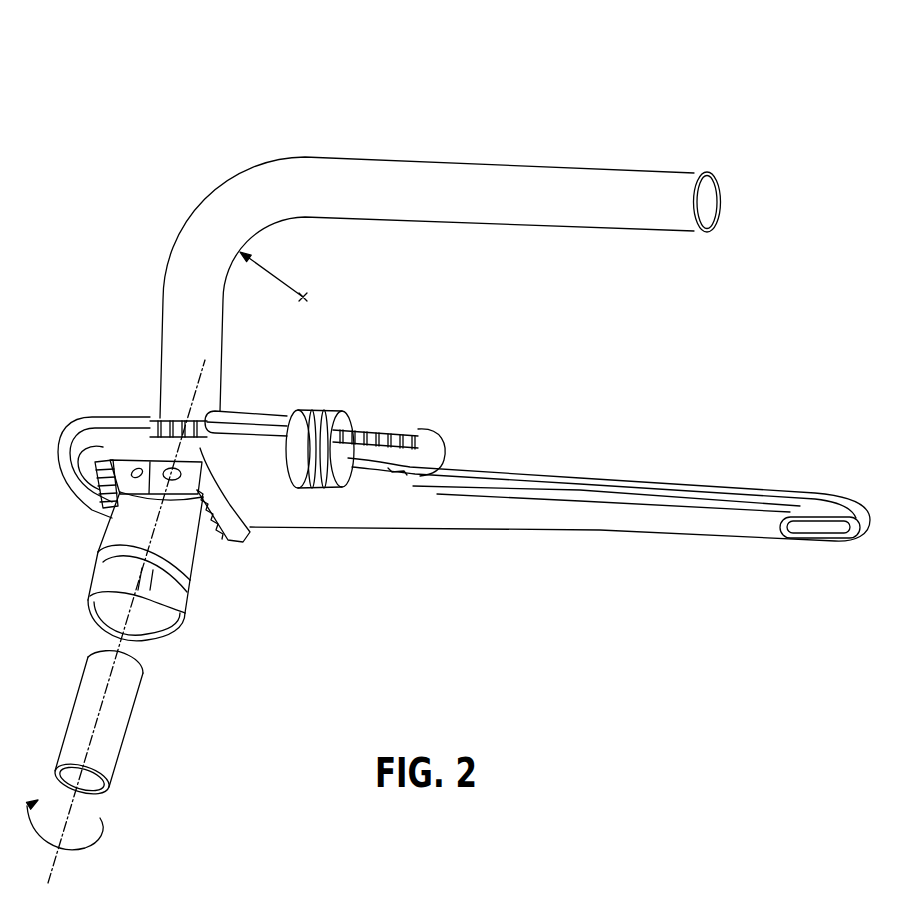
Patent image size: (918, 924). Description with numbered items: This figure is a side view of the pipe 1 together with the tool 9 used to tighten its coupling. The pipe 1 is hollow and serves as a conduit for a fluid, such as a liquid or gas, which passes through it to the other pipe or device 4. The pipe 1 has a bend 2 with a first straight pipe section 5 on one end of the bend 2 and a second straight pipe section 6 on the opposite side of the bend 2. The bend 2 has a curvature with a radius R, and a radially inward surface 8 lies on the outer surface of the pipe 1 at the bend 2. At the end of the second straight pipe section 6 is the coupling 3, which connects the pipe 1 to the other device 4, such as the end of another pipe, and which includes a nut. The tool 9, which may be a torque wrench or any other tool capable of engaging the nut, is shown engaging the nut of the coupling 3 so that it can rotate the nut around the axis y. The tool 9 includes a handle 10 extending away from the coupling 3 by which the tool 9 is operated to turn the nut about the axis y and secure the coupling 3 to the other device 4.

The pipe 1 is at (335, 78).
The bend 2 is at (440, 255).
The coupling 3 is at (232, 590).
The other device 4 is at (167, 705).
The first straight pipe section 5 is at (537, 251).
The second straight pipe section 6 is at (132, 396).
The radially inward surface 8 is at (249, 289).
The tool 9 is at (377, 555).
The handle 10 is at (628, 577).
The radius R is at (287, 277).
The axis y is at (115, 621).